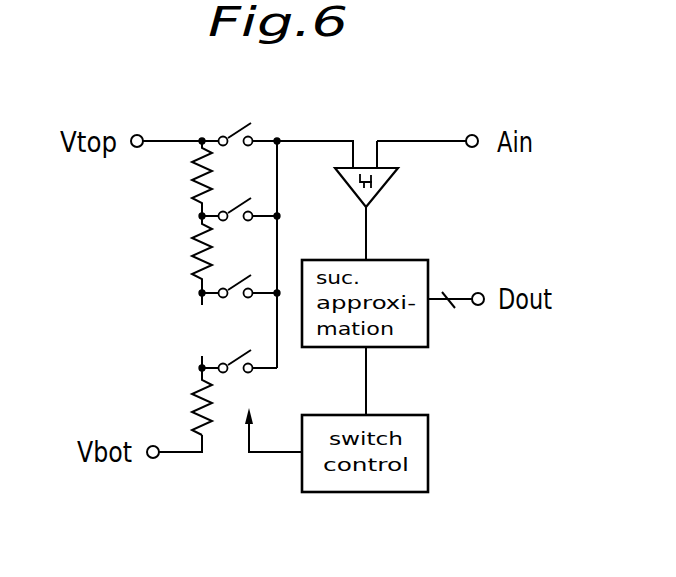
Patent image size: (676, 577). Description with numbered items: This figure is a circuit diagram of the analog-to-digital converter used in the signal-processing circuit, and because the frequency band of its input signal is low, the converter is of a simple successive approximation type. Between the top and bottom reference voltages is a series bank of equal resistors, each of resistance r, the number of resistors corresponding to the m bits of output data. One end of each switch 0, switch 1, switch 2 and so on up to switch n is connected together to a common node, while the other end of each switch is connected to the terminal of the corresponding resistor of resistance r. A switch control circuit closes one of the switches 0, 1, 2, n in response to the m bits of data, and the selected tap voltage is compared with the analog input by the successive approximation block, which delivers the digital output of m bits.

The switch 0 is at (241, 118).
The switch 1 is at (241, 194).
The switch 2 is at (241, 272).
The switch n is at (239, 378).
The resistance r is at (191, 286).
The m bits m is at (450, 314).